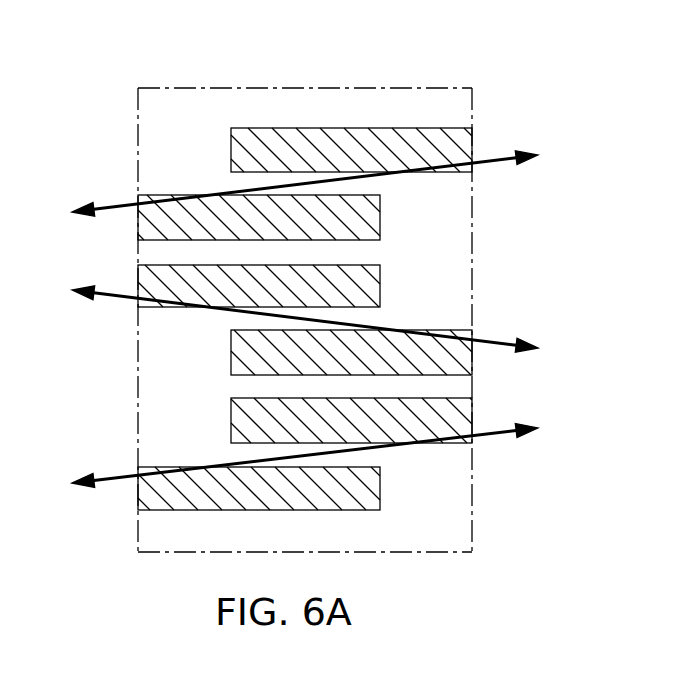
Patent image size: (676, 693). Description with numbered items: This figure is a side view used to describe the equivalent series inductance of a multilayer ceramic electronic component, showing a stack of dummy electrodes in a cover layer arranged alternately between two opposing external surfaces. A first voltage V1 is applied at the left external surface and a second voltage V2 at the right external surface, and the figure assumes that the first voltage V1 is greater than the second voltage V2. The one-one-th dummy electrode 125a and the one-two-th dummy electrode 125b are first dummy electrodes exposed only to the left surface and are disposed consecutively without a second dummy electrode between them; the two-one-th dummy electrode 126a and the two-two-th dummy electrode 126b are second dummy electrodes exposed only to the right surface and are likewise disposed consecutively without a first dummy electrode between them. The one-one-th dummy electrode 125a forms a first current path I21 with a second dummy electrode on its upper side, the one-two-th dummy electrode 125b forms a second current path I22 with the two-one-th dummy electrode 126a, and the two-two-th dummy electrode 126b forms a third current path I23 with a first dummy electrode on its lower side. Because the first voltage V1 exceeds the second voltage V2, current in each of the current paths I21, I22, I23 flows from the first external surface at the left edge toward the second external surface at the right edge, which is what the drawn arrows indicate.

The first voltage V1 is at (138, 72).
The second voltage V2 is at (472, 72).
The 1-1-th dummy electrode 125a is at (150, 223).
The 1-2-th dummy electrode 125b is at (148, 281).
The 2-1-th dummy electrode 126a is at (463, 358).
The 2-2-th dummy electrode 126b is at (462, 417).
The 2-1-th current path I21 is at (323, 179).
The 2-2-th current path I22 is at (323, 325).
The 2-3-th current path I23 is at (323, 451).